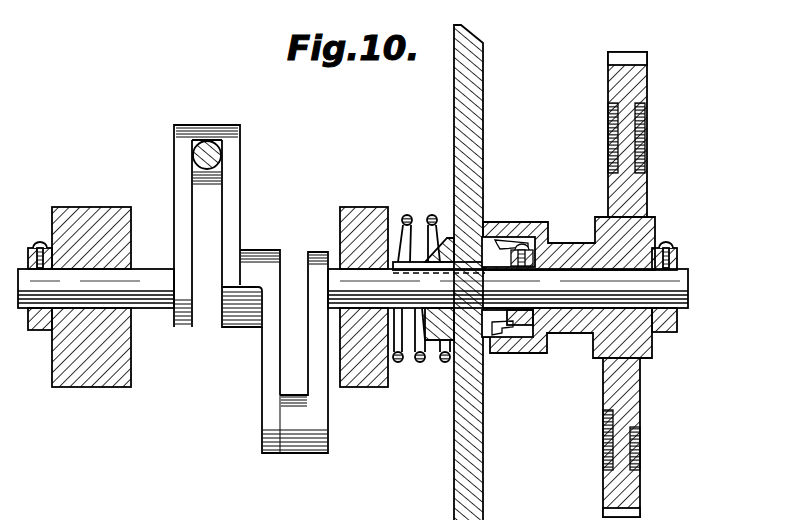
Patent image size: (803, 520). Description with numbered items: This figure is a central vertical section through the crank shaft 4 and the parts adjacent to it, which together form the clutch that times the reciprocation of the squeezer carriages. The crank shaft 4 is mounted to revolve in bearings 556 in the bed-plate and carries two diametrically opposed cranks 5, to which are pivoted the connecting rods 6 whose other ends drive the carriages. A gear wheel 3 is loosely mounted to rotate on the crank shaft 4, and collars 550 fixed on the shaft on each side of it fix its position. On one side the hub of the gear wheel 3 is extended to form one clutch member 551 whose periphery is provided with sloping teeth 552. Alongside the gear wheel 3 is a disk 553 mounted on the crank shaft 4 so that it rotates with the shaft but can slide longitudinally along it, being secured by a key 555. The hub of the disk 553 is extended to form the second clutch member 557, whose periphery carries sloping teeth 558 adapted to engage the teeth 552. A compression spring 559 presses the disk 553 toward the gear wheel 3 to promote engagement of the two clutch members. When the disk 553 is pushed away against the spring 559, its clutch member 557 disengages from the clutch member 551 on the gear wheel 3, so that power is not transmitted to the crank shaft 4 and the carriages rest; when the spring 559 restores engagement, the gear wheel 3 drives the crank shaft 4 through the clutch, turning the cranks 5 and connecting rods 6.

The gear wheel 3 is at (636, 495).
The crank shaft 4 is at (163, 310).
The cranks 5 is at (230, 201).
The connecting rods 6 is at (220, 158).
The collars 550 is at (548, 240).
The clutch member 551 is at (535, 357).
The sloping teeth 552 is at (503, 358).
The disk 553 is at (470, 466).
The key 555 is at (434, 216).
The bearings 556 is at (95, 380).
The second clutch member 557 is at (497, 232).
The sloping teeth 558 is at (512, 228).
The compression spring 559 is at (414, 364).